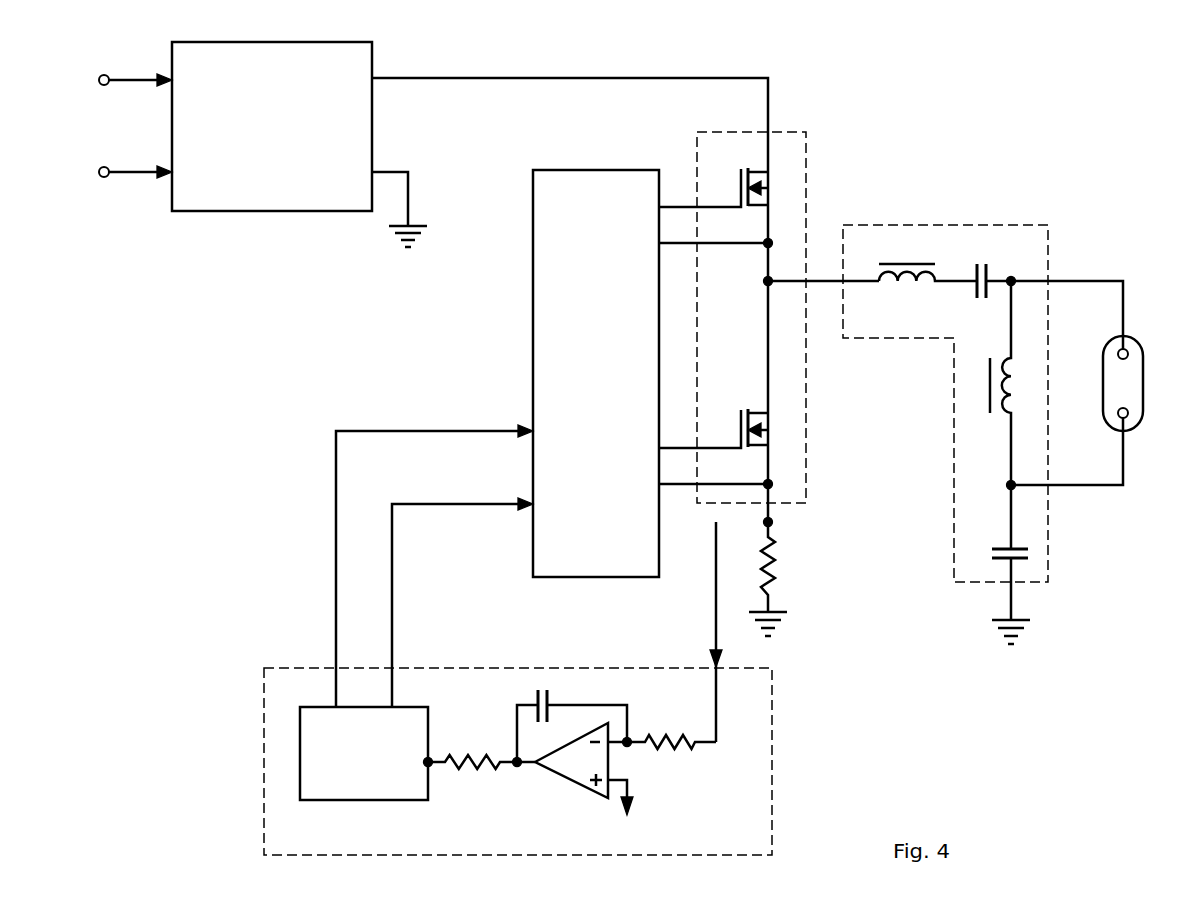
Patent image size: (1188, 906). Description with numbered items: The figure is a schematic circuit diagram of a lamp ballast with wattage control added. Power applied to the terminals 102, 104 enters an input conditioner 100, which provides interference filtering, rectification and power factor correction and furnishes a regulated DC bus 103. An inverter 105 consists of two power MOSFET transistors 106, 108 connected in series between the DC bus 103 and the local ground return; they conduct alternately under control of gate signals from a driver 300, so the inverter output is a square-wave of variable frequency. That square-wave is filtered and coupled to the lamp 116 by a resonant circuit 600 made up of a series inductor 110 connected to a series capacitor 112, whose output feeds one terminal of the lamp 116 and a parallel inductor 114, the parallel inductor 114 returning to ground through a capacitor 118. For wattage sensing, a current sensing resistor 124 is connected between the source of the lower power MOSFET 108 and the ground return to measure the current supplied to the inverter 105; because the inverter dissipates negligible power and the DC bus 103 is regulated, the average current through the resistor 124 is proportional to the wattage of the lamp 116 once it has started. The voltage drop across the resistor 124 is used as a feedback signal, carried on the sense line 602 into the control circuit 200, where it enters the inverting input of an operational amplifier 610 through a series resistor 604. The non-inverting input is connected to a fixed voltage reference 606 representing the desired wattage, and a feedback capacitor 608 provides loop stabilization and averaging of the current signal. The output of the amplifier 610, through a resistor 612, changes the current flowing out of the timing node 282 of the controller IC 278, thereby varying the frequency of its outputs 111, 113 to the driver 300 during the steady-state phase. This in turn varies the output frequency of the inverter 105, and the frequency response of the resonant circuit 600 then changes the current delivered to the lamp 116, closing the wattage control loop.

The input conditioner 100 is at (240, 42).
The terminal 102 is at (150, 76).
The terminal 104 is at (150, 168).
The DC bus 103 is at (738, 78).
The inverter 105 is at (808, 175).
The power MOSFET transistor 106 is at (740, 195).
The lower power MOSFET 108 is at (740, 435).
The series inductor 110 is at (908, 294).
The output 111 is at (522, 427).
The series capacitor 112 is at (975, 302).
The output 113 is at (522, 500).
The parallel inductor 114 is at (1000, 408).
The lamp 116 is at (1143, 385).
The capacitor 118 is at (1000, 545).
The current sensing resistor 124 is at (777, 588).
The control circuit 200 is at (322, 858).
The controller IC 278 is at (348, 802).
The timing node 282 is at (437, 753).
The driver 300 is at (603, 170).
The resonant circuit 600 is at (953, 225).
The current sense line 602 is at (718, 720).
The series resistor 604 is at (683, 738).
The fixed voltage reference 606 is at (630, 785).
The feedback capacitor 608 is at (550, 700).
The operational amplifier 610 is at (578, 783).
The resistor 612 is at (478, 765).